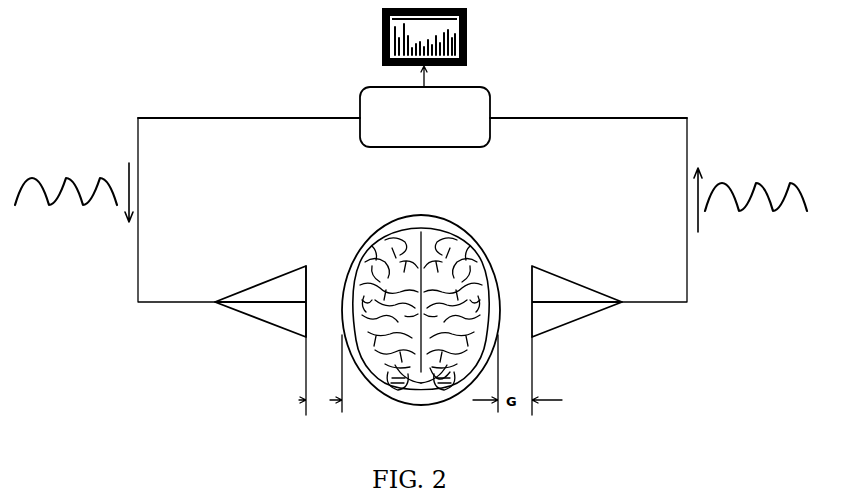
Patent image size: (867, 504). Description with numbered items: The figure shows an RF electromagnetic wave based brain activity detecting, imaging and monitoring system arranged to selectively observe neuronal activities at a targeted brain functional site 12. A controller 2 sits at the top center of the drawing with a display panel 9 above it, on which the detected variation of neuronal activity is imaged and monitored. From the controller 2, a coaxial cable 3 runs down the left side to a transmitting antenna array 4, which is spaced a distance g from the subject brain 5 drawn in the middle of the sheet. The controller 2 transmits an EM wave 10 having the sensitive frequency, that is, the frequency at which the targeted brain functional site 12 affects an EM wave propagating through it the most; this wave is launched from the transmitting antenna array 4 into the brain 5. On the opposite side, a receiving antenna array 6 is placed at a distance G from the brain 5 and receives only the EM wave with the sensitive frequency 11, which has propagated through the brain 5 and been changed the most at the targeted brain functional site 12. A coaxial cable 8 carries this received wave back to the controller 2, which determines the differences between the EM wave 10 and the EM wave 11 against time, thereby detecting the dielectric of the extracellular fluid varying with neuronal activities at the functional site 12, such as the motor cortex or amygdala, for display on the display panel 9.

The controller 2 is at (385, 88).
The coaxial cable 3 is at (215, 117).
The transmitting antenna array 4 is at (266, 291).
The subject brain 5 is at (385, 237).
The receiving antenna array 6 is at (563, 283).
The coaxial cable 8 is at (654, 117).
The display panel 9 is at (478, 28).
The EM wave with the sensitive frequency 10 is at (58, 178).
The received EM wave with the sensitive frequency 11 is at (762, 181).
The targeted brain functional site 12 is at (440, 358).